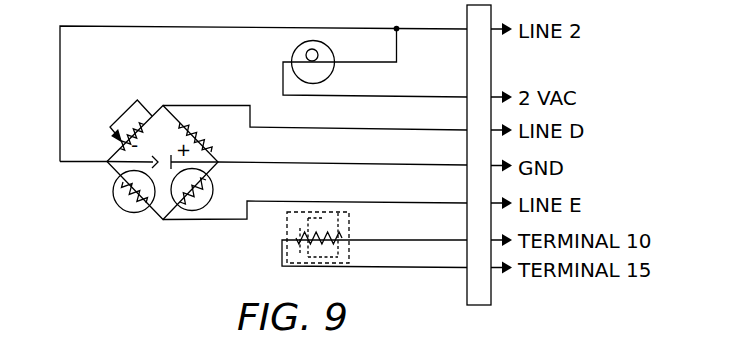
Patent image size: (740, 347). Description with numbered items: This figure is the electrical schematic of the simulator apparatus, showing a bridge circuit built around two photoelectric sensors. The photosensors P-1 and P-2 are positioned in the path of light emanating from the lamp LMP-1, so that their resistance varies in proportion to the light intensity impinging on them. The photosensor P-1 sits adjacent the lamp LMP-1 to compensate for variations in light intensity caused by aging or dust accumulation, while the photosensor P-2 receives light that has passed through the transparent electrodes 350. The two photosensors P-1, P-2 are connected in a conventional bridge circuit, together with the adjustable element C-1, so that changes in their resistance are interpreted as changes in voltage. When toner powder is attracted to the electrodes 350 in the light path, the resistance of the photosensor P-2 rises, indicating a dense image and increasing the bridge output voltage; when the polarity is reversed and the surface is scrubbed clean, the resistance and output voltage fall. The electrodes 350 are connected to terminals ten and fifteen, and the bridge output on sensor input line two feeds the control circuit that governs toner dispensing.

The transparent electrodes 350 is at (353, 249).
The variable resistor (potentiometer) of bridge C-1 is at (143, 125).
The photosensor P-1 is at (213, 193).
The photosensor P-2 is at (125, 210).
The lamp LMP-1 is at (344, 69).